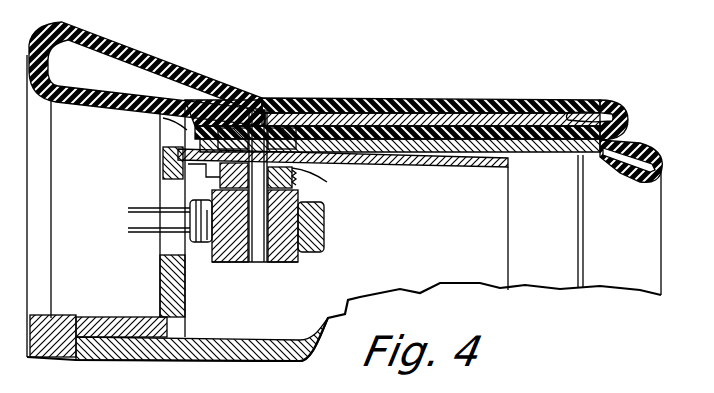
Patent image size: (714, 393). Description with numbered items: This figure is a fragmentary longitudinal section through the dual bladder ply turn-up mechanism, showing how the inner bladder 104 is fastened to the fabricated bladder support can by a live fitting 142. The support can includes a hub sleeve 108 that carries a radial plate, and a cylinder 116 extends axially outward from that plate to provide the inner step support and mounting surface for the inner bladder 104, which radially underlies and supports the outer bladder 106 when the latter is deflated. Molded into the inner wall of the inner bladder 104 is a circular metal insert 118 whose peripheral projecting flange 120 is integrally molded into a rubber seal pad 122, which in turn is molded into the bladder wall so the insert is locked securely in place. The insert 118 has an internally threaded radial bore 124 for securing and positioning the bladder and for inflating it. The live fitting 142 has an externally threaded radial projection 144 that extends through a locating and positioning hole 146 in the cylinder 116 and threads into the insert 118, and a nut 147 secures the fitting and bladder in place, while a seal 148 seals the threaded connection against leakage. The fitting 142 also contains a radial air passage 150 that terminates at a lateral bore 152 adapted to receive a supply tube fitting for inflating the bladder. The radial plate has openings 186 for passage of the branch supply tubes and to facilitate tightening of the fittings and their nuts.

The inner bladder 104 is at (550, 127).
The outer bladder 106 is at (478, 110).
The hub sleeve 108 is at (45, 337).
The cylinder 116 is at (457, 161).
The metal insert 118 is at (238, 100).
The peripheral projecting flange 120 is at (317, 98).
The rubber seal pad 122 is at (192, 97).
The internally threaded radial bore 124 is at (257, 127).
The live fitting 142 is at (258, 232).
The externally threaded radial projection 144 is at (292, 190).
The locating and positioning hole 146 is at (200, 165).
The nut 147 is at (293, 172).
The seal 148 is at (297, 104).
The radial air passage 150 is at (276, 258).
The lateral bore 152 is at (218, 250).
The openings 186 is at (170, 256).